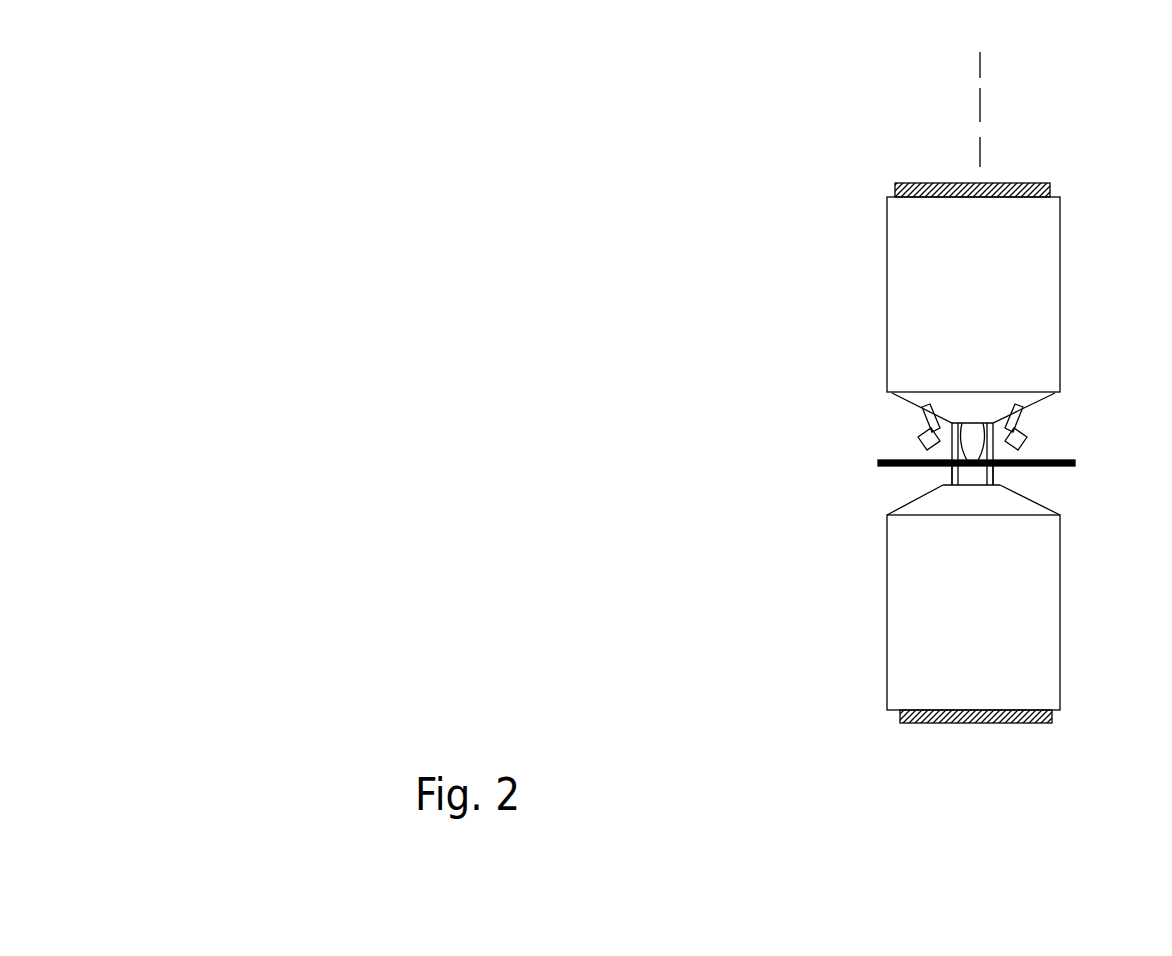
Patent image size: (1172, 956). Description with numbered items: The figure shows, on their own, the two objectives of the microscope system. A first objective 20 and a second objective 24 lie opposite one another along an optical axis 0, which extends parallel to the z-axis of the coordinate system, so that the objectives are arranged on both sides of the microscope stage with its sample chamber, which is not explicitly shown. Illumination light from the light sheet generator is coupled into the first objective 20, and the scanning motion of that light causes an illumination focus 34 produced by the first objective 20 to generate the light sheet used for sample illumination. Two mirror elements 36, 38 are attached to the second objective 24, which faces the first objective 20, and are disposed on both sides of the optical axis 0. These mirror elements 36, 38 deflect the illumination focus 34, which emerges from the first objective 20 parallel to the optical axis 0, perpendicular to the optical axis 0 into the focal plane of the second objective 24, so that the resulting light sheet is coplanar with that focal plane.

The optical axis 0 is at (981, 100).
The first objective 20 is at (886, 625).
The second objective 24 is at (1062, 335).
The illumination focus 34 is at (922, 460).
The mirror element 36 is at (925, 432).
The mirror element 38 is at (1013, 438).